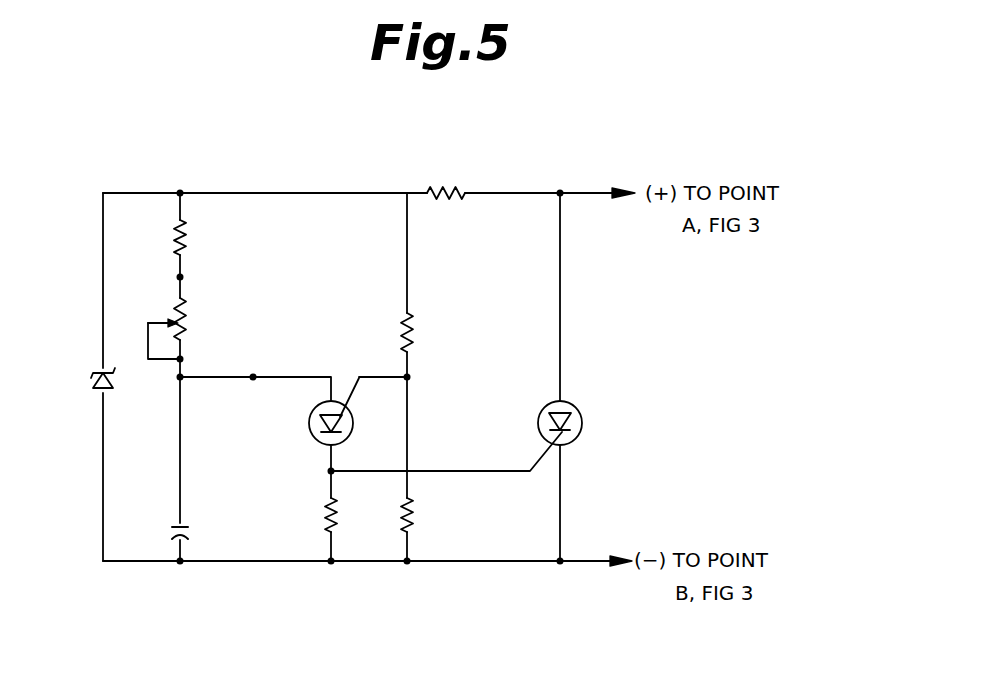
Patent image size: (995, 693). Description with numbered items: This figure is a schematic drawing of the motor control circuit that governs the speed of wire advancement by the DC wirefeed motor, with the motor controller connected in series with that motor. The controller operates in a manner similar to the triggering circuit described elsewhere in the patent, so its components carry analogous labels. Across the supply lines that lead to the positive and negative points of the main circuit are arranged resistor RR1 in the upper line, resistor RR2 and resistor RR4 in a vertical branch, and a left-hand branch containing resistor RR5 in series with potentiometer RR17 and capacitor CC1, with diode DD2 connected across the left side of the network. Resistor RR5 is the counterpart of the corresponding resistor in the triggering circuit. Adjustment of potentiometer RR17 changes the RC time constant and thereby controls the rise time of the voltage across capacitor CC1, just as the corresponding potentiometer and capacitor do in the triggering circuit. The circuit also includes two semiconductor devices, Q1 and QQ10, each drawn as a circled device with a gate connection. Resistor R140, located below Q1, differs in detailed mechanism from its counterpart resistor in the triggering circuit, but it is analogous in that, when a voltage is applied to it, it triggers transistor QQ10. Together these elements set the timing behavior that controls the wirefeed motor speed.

The resistor RR5 is at (203, 237).
The potentiometer RR17 is at (196, 328).
The resistor RR2 is at (431, 332).
The resistor RR1 is at (451, 179).
The resistor RR4 is at (432, 515).
The resistor R140 is at (329, 513).
The capacitor CC1 is at (204, 531).
The zener diode DD2 is at (77, 377).
The thyristor Q1 is at (315, 411).
The transistor QQ10 is at (589, 423).